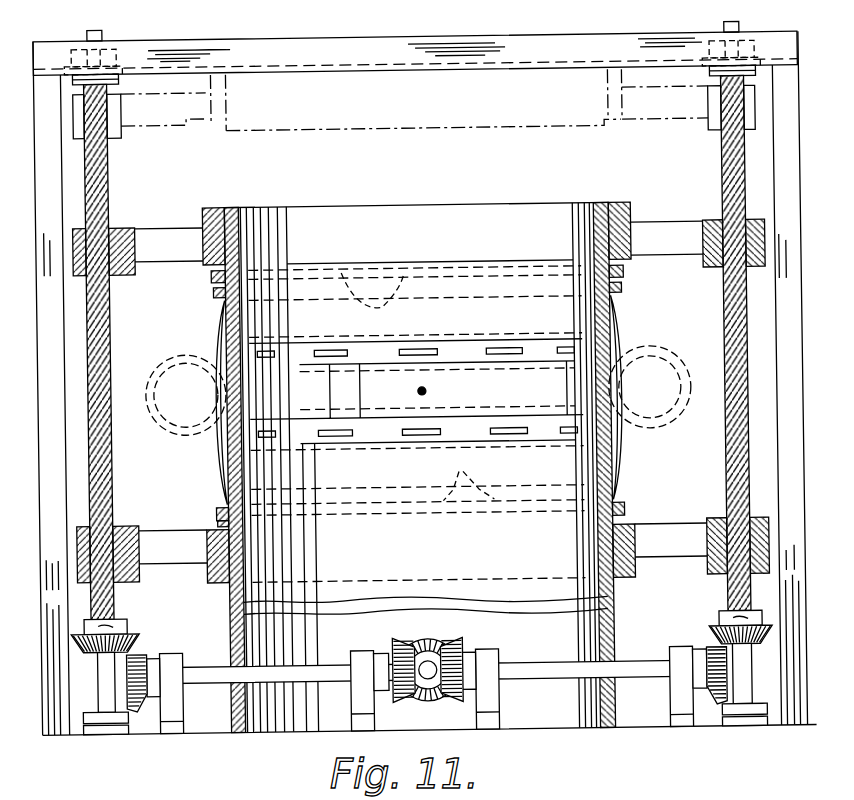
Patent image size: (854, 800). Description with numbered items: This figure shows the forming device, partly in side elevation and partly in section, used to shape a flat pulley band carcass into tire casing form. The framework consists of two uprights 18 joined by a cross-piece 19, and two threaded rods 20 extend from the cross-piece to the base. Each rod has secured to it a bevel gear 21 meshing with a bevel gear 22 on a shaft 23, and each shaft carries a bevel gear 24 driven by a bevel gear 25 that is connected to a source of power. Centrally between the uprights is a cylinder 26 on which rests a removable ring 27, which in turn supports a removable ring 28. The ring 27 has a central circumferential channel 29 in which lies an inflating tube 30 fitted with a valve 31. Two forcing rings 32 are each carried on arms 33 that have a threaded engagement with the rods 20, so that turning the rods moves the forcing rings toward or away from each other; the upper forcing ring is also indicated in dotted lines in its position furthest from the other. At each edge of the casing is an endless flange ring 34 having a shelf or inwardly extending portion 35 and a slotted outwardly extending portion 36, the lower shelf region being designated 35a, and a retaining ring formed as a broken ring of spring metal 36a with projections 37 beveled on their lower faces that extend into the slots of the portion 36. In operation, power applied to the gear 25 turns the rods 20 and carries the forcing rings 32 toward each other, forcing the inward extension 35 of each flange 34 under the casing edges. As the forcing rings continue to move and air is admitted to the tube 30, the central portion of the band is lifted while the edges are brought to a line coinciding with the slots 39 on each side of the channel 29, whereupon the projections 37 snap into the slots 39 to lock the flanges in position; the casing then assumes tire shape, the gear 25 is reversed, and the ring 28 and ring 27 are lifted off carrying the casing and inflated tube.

The upright 18 is at (74, 182).
The cross-piece 19 is at (418, 24).
The threaded rod 20 is at (110, 321).
The bevel gear 21 is at (133, 632).
The bevel gear 22 is at (143, 653).
The shaft 23 is at (315, 665).
The bevel gear 24 is at (410, 643).
The bevel gear 25 is at (433, 640).
The cylinder 26 is at (602, 619).
The removable ring 27 is at (545, 344).
The removable ring 28 is at (450, 241).
The central circumferential channel 29 is at (585, 383).
The inflating tube 30 is at (602, 380).
The valve 31 is at (416, 391).
The forcing ring 32 is at (582, 130).
The arm 33 is at (186, 124).
The endless flange ring 34 is at (230, 297).
The shelf or inwardly extending portion 35 is at (226, 300).
The lower spring strip end 35a is at (233, 509).
The slotted outwardly extending portion 36 is at (228, 273).
The broken ring of spring metal 36a is at (381, 246).
The projection 37 is at (416, 393).
The slot 39 is at (433, 348).